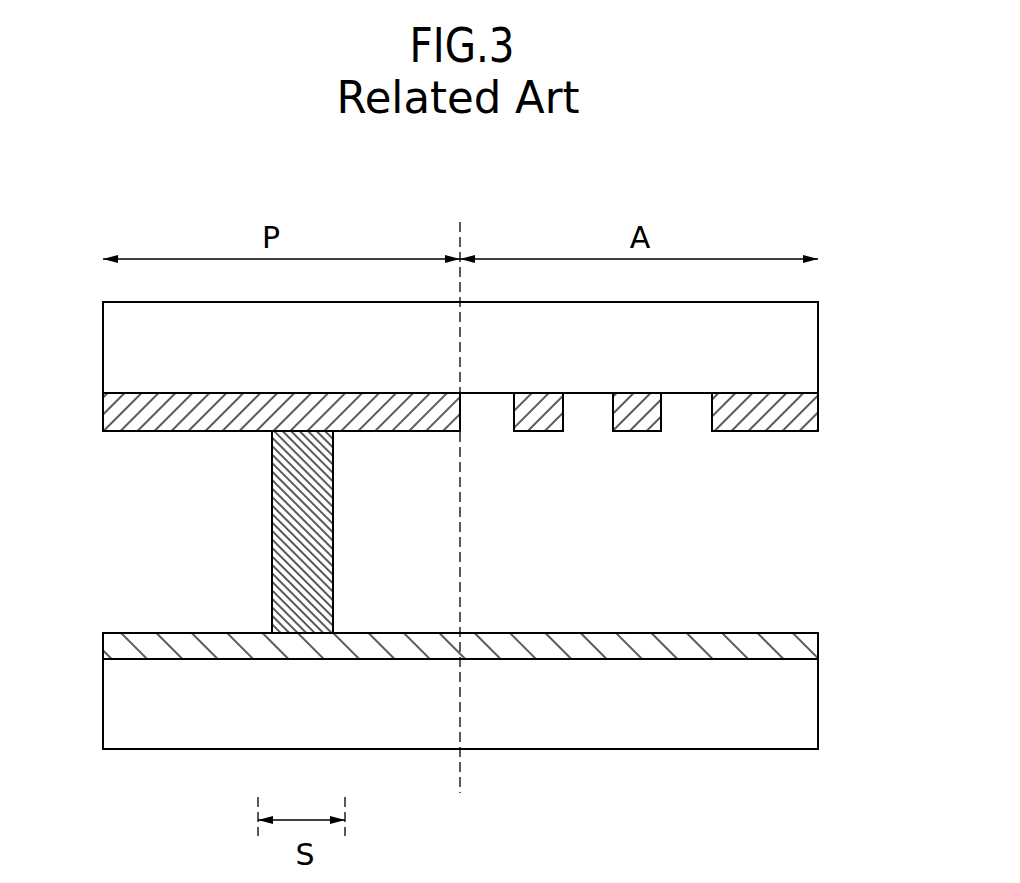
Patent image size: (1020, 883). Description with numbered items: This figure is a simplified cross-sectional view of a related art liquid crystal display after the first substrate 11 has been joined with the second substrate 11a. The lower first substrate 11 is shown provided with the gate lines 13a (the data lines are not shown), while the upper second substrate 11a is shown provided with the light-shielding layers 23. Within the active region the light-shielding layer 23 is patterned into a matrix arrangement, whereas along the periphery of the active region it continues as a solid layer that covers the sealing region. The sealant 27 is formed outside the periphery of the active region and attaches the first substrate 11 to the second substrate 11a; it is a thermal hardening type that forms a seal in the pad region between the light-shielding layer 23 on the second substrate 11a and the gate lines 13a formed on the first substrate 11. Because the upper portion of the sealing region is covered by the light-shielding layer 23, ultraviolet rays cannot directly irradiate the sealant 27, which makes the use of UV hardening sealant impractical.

The second substrate 11a is at (803, 350).
The light-shielding layer 23 is at (118, 410).
The sealant 27 is at (290, 529).
The gate lines 13a is at (805, 644).
The first substrate 11 is at (803, 708).